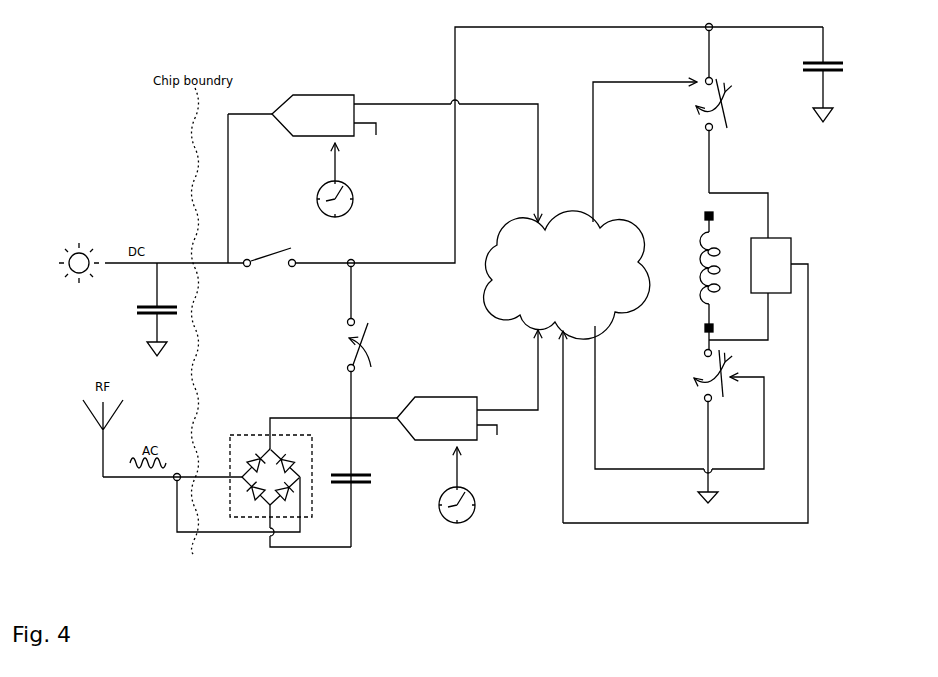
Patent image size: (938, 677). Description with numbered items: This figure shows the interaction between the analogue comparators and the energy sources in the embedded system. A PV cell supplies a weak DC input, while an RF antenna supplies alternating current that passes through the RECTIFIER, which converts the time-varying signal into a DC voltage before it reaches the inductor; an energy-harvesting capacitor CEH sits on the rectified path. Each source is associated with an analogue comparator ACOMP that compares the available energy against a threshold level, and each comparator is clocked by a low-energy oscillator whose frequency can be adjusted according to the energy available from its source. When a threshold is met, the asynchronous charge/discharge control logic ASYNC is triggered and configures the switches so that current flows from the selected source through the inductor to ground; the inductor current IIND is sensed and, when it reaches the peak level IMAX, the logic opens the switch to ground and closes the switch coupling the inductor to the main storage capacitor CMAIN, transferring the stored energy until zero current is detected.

The analogue comparator ACOMP is at (387, 309).
The energy harvesting capacitor CEH is at (363, 482).
The rectifier RECTIFIER is at (287, 475).
The asynchronous logic ASYNC is at (567, 275).
The main storage unit CMAIN is at (803, 74).
The maximum current detector IMAX is at (701, 358).
The inductor current IIND is at (693, 272).